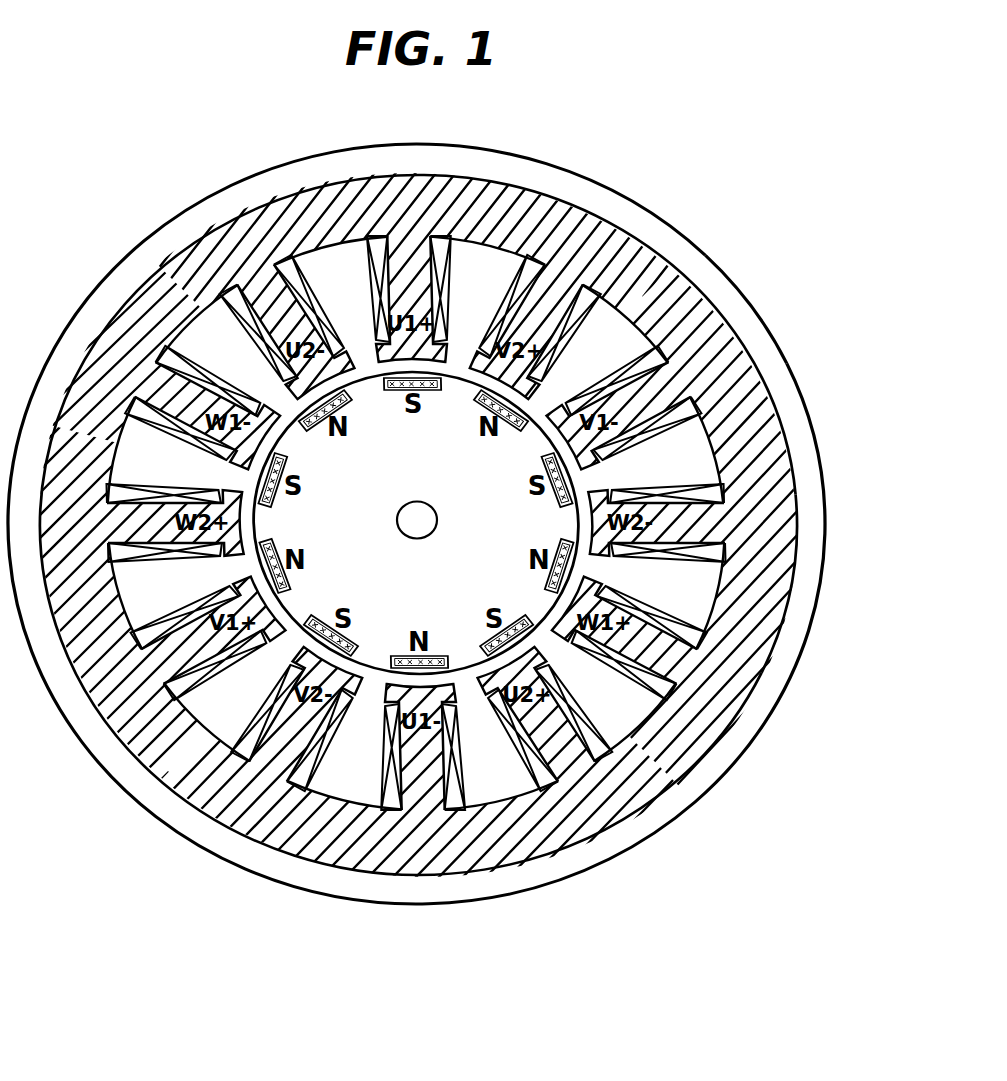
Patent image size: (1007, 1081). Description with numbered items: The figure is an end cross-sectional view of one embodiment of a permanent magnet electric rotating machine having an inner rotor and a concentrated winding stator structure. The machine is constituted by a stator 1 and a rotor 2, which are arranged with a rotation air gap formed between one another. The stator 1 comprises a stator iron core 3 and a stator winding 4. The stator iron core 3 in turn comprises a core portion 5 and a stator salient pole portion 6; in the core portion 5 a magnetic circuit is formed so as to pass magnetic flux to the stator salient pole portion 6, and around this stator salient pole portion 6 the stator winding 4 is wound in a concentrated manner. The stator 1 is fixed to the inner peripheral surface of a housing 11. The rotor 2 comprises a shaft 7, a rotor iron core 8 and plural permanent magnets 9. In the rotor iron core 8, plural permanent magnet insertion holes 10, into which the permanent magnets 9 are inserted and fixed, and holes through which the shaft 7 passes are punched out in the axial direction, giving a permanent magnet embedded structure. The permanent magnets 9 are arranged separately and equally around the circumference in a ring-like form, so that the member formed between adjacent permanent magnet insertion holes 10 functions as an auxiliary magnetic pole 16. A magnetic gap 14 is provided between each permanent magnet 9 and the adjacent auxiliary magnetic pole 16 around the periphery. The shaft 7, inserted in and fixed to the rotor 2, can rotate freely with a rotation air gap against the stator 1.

The stator 1 is at (633, 240).
The rotor 2 is at (645, 455).
The stator iron core 3 is at (737, 302).
The stator winding 4 is at (670, 694).
The core portion 5 is at (796, 593).
The stator salient pole portion 6 is at (792, 476).
The shaft 7 is at (424, 524).
The rotor iron core 8 is at (458, 603).
The permanent magnets 9 is at (552, 487).
The permanent magnet insertion holes 10 is at (427, 392).
The housing 11 is at (550, 172).
The magnetic gap 14 is at (284, 496).
The auxiliary magnetic pole 16 is at (298, 607).